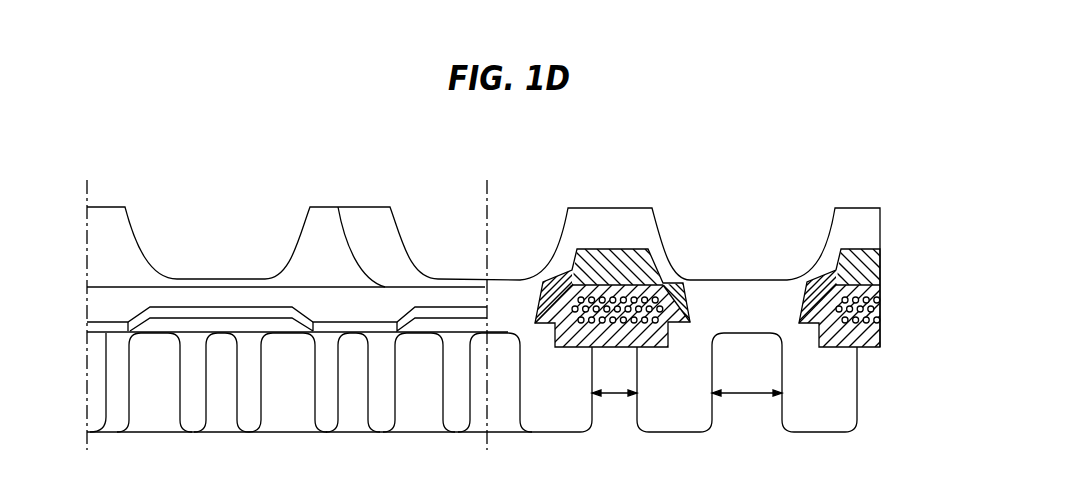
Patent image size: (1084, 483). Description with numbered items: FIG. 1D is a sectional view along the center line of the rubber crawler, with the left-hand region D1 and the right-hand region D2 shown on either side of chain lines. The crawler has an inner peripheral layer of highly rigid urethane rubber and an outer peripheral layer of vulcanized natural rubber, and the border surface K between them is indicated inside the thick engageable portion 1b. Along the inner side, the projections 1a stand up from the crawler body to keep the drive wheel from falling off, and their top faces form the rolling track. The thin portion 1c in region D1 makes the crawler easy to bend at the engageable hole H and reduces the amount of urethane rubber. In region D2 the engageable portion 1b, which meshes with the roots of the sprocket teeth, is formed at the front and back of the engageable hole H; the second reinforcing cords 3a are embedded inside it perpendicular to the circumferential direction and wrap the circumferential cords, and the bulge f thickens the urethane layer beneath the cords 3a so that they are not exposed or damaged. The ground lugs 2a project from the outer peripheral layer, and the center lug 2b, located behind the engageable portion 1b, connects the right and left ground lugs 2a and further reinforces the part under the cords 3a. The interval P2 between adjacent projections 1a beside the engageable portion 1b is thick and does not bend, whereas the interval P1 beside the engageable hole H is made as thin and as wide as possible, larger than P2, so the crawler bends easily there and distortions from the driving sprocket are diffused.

The projection 1a is at (383, 403).
The engageable portion 1b is at (863, 338).
The thin portion 1c is at (197, 323).
The ground lug 2a is at (358, 222).
The center lug 2b is at (623, 258).
The second reinforcing cords 3a is at (578, 302).
The border surface K is at (628, 272).
The bulge f is at (657, 290).
The engageable hole H is at (762, 293).
The interval P1 is at (747, 378).
The interval P2 is at (614, 378).
The region D1 is at (185, 283).
The region D2 is at (610, 283).